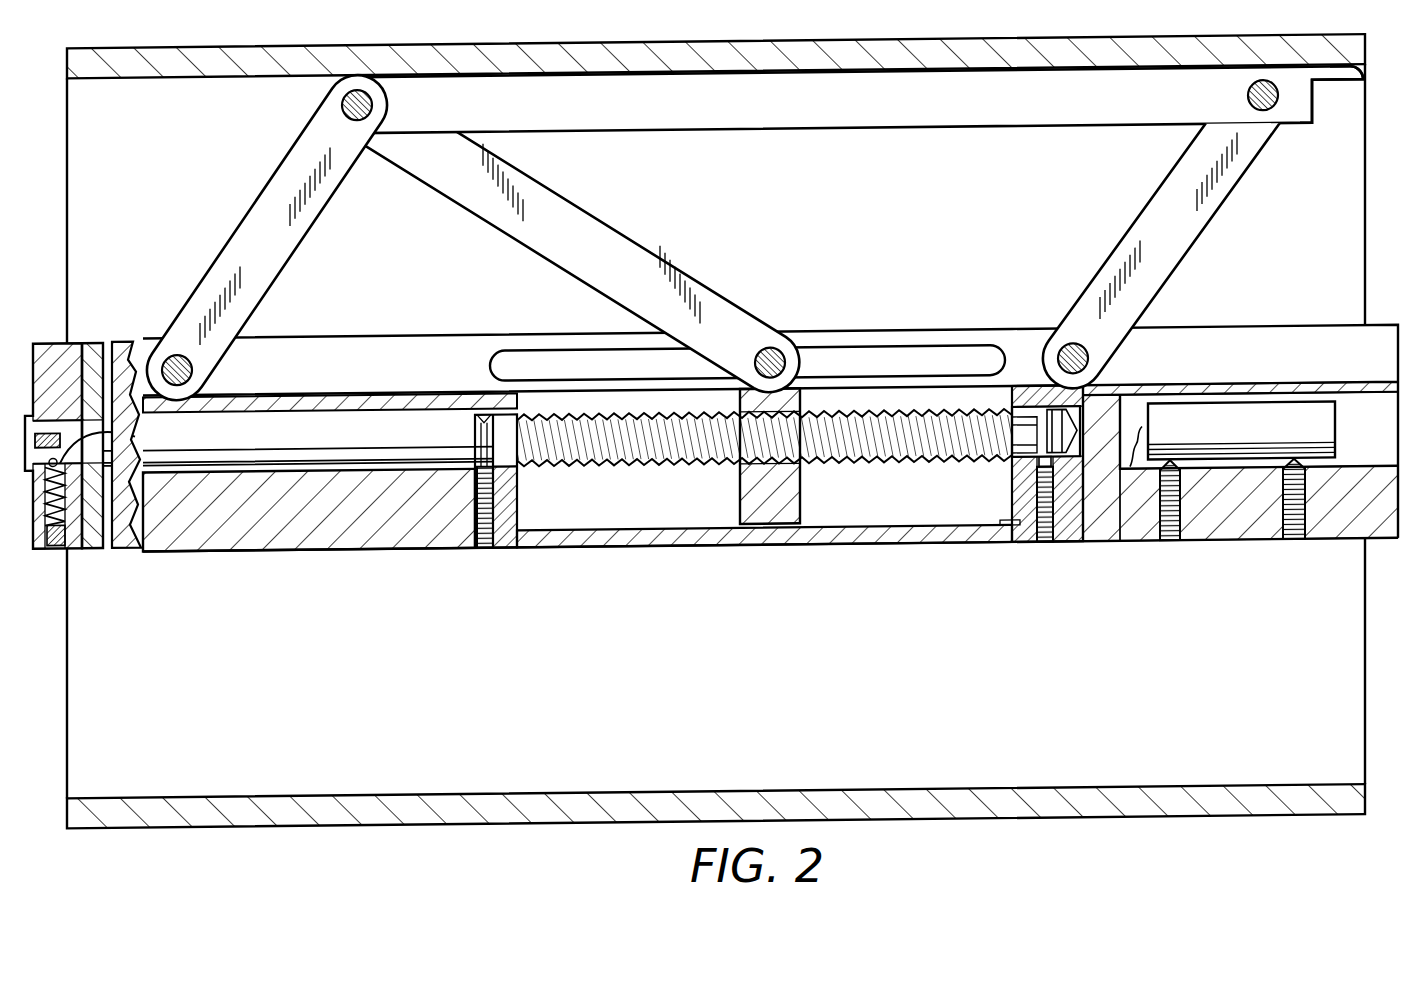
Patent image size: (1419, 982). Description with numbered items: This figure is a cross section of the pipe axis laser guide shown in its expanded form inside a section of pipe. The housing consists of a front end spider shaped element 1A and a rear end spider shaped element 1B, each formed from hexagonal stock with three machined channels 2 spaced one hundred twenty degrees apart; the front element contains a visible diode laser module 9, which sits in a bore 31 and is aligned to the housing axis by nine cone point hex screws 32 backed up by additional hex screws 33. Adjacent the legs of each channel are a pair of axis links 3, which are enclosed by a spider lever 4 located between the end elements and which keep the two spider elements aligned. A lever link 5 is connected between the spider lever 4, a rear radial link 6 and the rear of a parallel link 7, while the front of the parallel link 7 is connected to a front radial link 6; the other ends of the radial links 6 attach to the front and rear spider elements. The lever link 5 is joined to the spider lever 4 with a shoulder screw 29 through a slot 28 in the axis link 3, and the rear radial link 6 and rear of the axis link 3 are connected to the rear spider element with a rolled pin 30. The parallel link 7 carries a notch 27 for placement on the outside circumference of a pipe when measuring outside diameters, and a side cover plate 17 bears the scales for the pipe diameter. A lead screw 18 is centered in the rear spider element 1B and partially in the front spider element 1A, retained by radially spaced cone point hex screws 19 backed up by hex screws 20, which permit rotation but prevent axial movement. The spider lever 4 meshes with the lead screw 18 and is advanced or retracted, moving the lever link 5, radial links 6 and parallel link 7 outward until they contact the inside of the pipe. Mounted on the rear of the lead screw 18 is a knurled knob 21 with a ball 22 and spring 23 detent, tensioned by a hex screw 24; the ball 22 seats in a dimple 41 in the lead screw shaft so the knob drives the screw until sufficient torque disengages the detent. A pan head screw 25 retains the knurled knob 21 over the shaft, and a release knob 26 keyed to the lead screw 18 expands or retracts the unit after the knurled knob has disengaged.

The front end spider shaped element 1A is at (1102, 548).
The rear end spider shaped element 1B is at (313, 548).
The machined channels 2 is at (1209, 336).
The axis links 3 is at (401, 336).
The spider lever 4 is at (803, 490).
The lever link 5 is at (596, 220).
The radial link 6 is at (258, 196).
The parallel link 7 is at (933, 137).
The visible diode laser module 9 is at (1241, 429).
The side cover plate 17 is at (702, 548).
The lead screw 18 is at (648, 466).
The cone point hex screws 19 is at (502, 487).
The hex screws 20 is at (489, 547).
The knurled knob 21 is at (76, 343).
The ball 22 is at (64, 450).
The spring 23 is at (55, 548).
The hex screw 24 is at (50, 546).
The pan head screw 25 is at (28, 416).
The release knob 26 is at (100, 342).
The notch 27 is at (1344, 96).
The slot 28 is at (855, 356).
The shoulder screw 29 is at (798, 328).
The rolled pin 30 is at (193, 371).
The bore 31 is at (1259, 430).
The cone point hex screws 32 is at (1180, 492).
The hex screws 33 is at (1168, 552).
The dimple 41 is at (140, 449).